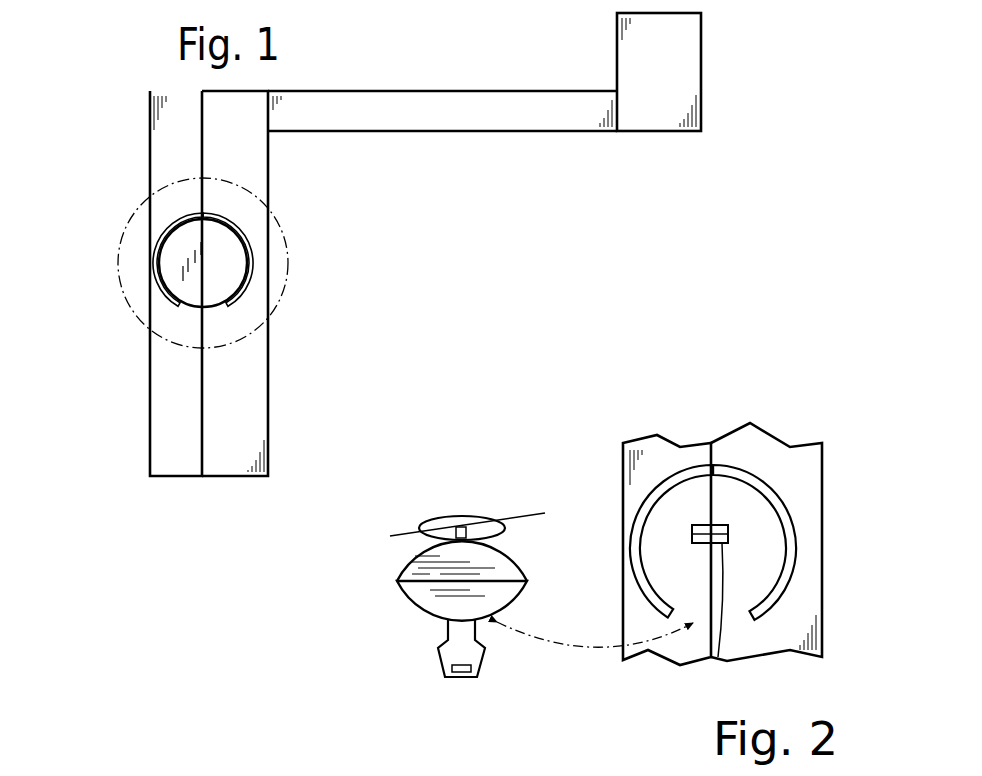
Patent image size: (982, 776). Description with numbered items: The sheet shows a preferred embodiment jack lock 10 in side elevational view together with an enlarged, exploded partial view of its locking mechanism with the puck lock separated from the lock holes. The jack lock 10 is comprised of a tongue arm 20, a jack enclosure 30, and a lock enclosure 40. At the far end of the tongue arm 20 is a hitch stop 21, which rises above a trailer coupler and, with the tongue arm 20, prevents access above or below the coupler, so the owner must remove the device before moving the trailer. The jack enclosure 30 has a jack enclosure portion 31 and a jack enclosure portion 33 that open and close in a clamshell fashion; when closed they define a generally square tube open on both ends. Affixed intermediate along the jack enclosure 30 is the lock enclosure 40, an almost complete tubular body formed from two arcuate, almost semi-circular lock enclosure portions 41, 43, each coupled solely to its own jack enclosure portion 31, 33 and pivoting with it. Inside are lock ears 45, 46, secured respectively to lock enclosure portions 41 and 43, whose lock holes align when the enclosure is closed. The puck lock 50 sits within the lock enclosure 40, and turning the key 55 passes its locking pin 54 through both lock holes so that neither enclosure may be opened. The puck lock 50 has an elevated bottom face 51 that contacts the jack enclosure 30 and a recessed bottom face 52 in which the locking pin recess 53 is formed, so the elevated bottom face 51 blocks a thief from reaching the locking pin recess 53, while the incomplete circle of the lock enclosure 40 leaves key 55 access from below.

In FIG. 1, the jack lock 10 is at (118, 106).
In FIG. 1, the tongue arm 20 is at (526, 138).
In FIG. 1, the hitch stop 21 is at (621, 56).
In FIG. 1, the jack enclosure 30 is at (146, 415).
In FIG. 1, the jack enclosure portion 31 is at (167, 387).
In FIG. 2, the jack enclosure portion 31 is at (628, 466).
In FIG. 1, the jack enclosure portion 33 is at (248, 418).
In FIG. 2, the jack enclosure portion 33 is at (800, 593).
In FIG. 1, the lock enclosure 40 is at (140, 279).
In FIG. 1, the lock enclosure portion 41 is at (160, 245).
In FIG. 2, the lock enclosure portion 41 is at (637, 578).
In FIG. 1, the lock enclosure portion 43 is at (247, 254).
In FIG. 2, the lock enclosure portion 43 is at (793, 548).
In FIG. 2, the lock ear 45 is at (722, 527).
In FIG. 2, the lock ear 46 is at (718, 657).
In FIG. 1, the puck lock 50 is at (226, 275).
In FIG. 2, the puck lock 50 is at (446, 456).
In FIG. 2, the elevated bottom face 51 is at (418, 597).
In FIG. 2, the recessed bottom face 52 is at (470, 498).
In FIG. 2, the locking pin recess 53 is at (390, 536).
In FIG. 2, the locking pin 54 is at (468, 538).
In FIG. 2, the key 55 is at (492, 654).